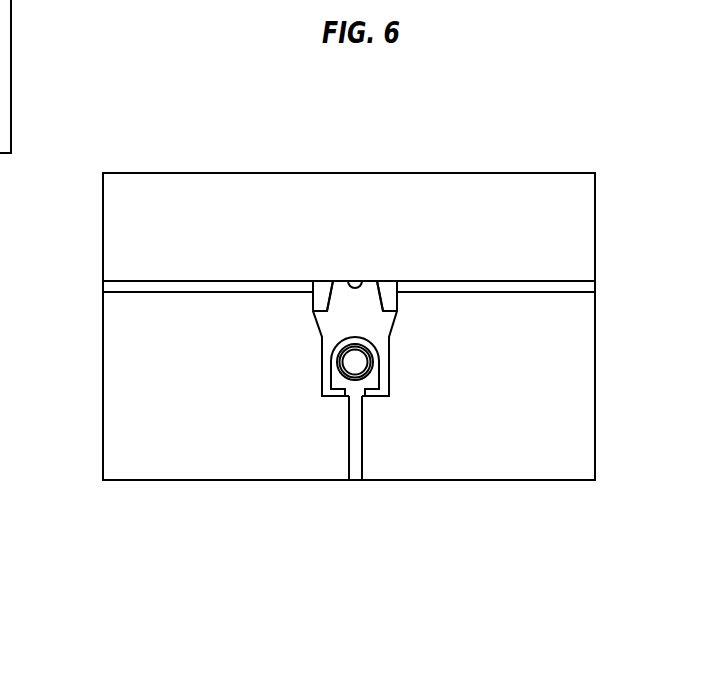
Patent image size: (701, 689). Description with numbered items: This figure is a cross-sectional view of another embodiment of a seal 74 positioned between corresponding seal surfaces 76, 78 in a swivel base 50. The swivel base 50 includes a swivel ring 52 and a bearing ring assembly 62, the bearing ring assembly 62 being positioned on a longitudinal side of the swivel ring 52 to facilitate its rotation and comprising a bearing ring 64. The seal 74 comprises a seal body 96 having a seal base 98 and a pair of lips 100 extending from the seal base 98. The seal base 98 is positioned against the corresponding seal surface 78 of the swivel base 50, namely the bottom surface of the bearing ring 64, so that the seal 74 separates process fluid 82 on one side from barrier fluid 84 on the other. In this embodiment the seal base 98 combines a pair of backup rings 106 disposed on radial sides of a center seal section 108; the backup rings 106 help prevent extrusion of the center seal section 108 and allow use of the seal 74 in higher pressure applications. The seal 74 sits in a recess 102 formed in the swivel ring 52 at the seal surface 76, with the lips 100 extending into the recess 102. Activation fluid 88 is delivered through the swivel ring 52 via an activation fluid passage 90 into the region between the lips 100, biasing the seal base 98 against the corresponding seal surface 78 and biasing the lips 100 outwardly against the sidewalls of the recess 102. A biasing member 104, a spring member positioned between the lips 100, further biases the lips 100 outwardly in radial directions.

The swivel base 50 is at (583, 164).
The swivel ring 52 is at (17, 74).
The bearing ring assembly 62 is at (601, 237).
The bearing ring 64 is at (125, 239).
The seal 74 is at (300, 332).
The seal surface 76 is at (217, 289).
The corresponding seal surface 78 is at (252, 283).
The process fluid 82 is at (140, 290).
The barrier fluid 84 is at (542, 287).
The activation fluid 88 is at (353, 473).
The activation fluid passage 90 is at (362, 445).
The seal body 96 is at (380, 318).
The seal base 98 is at (343, 270).
The lips 100 is at (381, 372).
The recess 102 is at (400, 389).
The biasing member 104 is at (355, 366).
The backup rings 106 is at (330, 281).
The center seal section 108 is at (367, 281).